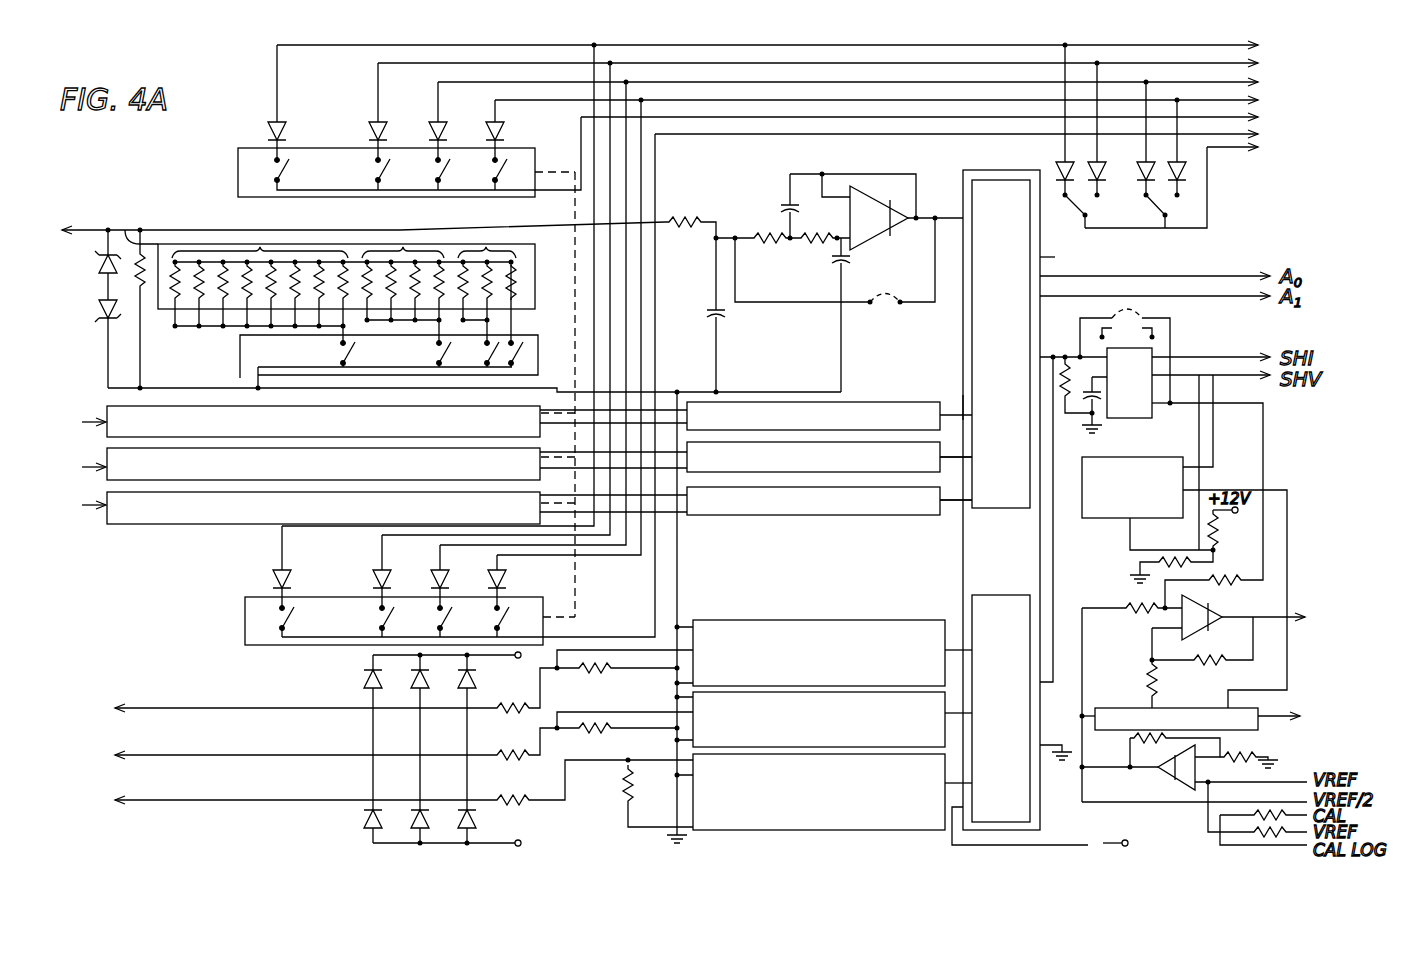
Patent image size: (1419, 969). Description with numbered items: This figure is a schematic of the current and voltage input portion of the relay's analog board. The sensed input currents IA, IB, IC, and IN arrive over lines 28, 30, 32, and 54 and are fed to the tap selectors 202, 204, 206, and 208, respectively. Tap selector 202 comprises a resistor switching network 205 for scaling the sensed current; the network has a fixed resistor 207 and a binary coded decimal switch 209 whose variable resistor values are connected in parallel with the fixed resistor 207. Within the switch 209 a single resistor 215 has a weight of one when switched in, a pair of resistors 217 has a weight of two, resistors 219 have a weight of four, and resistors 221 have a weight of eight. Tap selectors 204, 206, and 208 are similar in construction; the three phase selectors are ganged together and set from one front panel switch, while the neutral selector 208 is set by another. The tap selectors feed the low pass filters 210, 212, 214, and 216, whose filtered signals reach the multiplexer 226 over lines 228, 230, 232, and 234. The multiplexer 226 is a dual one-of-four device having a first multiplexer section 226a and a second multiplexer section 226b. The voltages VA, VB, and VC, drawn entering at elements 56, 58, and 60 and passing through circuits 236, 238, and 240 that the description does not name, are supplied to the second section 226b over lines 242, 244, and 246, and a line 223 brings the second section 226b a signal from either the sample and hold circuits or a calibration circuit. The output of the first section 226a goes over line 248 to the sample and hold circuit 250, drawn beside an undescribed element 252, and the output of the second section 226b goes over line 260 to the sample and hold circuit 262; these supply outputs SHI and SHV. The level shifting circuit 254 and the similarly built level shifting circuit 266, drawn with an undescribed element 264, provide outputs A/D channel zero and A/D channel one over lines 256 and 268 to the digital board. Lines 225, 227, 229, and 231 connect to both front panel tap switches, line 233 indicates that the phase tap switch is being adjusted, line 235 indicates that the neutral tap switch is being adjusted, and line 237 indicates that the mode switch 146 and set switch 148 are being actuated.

The line 28 is at (93, 226).
The line 30 is at (81, 410).
The line 32 is at (78, 464).
The line 54 is at (97, 514).
The phase A voltage input 56 is at (226, 706).
The phase B voltage input 58 is at (256, 754).
The phase C voltage input 60 is at (230, 798).
The mode switch 146 is at (1072, 205).
The set switch 148 is at (1188, 205).
The tap selector 202 is at (191, 206).
The tap selector 204 is at (107, 405).
The resistor switching network 205 is at (227, 343).
The tap selector 206 is at (143, 481).
The fixed resistor 207 is at (137, 228).
The tap selector 208 is at (192, 525).
The binary coded decimal switch 209 is at (538, 289).
The filter 210 is at (762, 205).
The filter 212 is at (880, 401).
The filter 214 is at (870, 473).
The resistor 215 is at (513, 273).
The filter 216 is at (765, 516).
The pair of resistors 217 is at (485, 250).
The resistors 219 is at (418, 249).
The resistors 221 is at (240, 250).
The line 223 is at (1088, 845).
The line 225 is at (795, 43).
The multiplexer 226 is at (990, 148).
The first 1-of-4 multiplexer section 226a is at (985, 512).
The second 1-of-4 multiplexer section 226b is at (1024, 594).
The line 227 is at (846, 62).
The line 228 is at (940, 214).
The line 229 is at (876, 81).
The line 230 is at (958, 395).
The line 231 is at (904, 99).
The line 232 is at (945, 460).
The line 233 is at (947, 117).
The line 234 is at (962, 502).
The line 235 is at (984, 135).
The voltage input circuit 236 is at (833, 620).
The line 237 is at (1199, 184).
The voltage input circuit 238 is at (677, 697).
The voltage input circuit 240 is at (800, 831).
The line 242 is at (953, 648).
The line 244 is at (957, 712).
The line 246 is at (955, 790).
The line 248 is at (1055, 257).
The sample and hold circuit 250 is at (1186, 342).
The sample and hold 252 is at (1210, 430).
The level shifting circuit 254 is at (1308, 532).
The line 256 is at (1295, 615).
The line 260 is at (1054, 592).
The sample and hold circuit 262 is at (1120, 525).
The level shift circuit 264 is at (1287, 681).
The level shifting circuit 266 is at (1123, 683).
The line 268 is at (1268, 714).